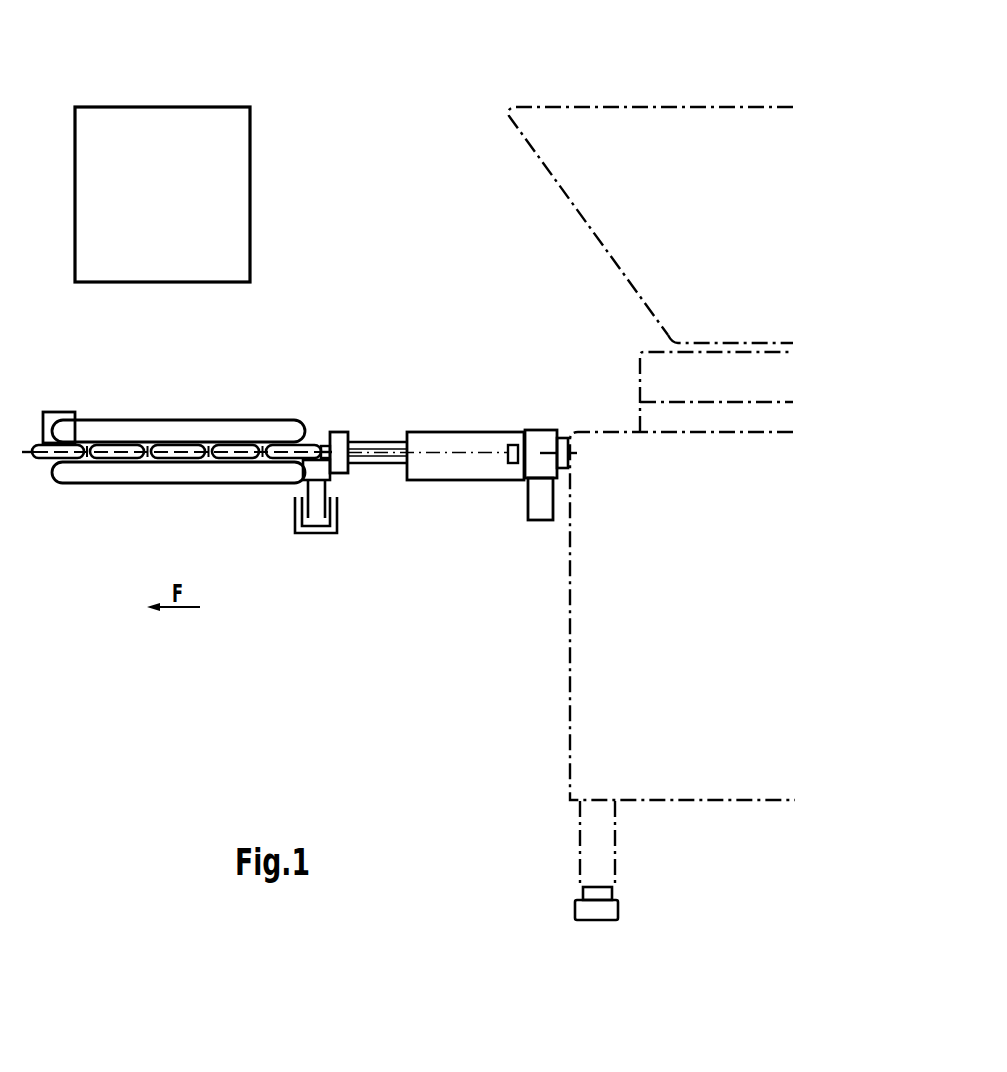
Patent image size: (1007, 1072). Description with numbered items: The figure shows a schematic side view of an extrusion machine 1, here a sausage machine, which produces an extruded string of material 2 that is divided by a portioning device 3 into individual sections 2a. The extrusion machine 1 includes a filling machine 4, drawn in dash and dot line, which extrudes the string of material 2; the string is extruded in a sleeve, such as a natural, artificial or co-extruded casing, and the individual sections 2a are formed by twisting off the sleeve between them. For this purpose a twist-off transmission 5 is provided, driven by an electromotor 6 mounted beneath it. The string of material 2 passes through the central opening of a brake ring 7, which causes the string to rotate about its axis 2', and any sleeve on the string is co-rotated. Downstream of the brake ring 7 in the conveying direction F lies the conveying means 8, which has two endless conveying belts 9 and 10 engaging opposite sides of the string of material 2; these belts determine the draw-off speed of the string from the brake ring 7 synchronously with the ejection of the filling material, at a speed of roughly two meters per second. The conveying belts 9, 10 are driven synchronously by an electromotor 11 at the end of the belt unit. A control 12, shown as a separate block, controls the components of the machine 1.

The extrusion machine 1 is at (421, 75).
The string of material 2 is at (177, 391).
The individual sections 2a is at (318, 440).
The axis 2' is at (436, 416).
The portioning device 3 is at (303, 546).
The filling machine 4 is at (723, 542).
The twist-off transmission 5 is at (541, 429).
The electromotor 6 is at (527, 510).
The brake ring 7 is at (341, 431).
The conveying means 8 is at (118, 520).
The endless conveying belt 9 is at (177, 421).
The endless conveying belt 10 is at (190, 484).
The electromotor 11 is at (66, 411).
The control 12 is at (250, 185).